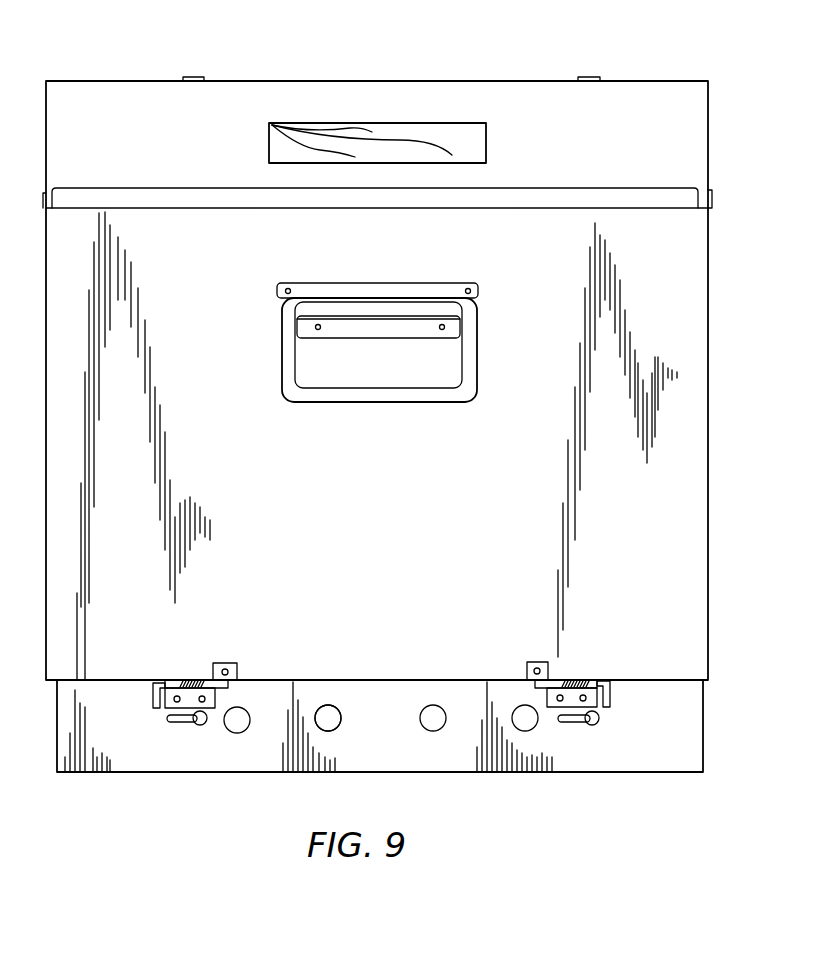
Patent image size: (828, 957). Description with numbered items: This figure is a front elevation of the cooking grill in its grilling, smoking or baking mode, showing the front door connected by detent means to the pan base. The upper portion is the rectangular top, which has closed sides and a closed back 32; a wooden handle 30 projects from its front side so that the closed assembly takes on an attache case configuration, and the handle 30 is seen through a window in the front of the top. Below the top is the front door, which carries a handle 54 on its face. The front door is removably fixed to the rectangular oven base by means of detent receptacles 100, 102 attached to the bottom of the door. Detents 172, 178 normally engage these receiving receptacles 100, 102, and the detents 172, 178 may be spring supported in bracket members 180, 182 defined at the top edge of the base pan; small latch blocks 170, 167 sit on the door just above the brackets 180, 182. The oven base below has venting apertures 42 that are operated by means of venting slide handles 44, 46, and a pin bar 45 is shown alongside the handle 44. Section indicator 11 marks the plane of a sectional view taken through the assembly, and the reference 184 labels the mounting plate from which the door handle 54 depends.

The section line 11- 11 is at (543, 152).
The wooden handle 30 is at (269, 127).
The closed back 32 is at (365, 92).
The venting apertures 42 is at (335, 725).
The venting slide handle 44 is at (200, 725).
The pin bar 45 is at (175, 722).
The venting slide handle 46 is at (600, 718).
The handle 54 is at (477, 368).
The detent receptacle 100 is at (210, 663).
The detent receptacle 102 is at (515, 662).
The latch block 167 is at (532, 662).
The latch block 170 is at (232, 663).
The detent 172 is at (152, 692).
The detent 178 is at (618, 687).
The bracket member 180 is at (215, 698).
The bracket member 182 is at (547, 697).
The handle mounting plate 184 is at (373, 290).